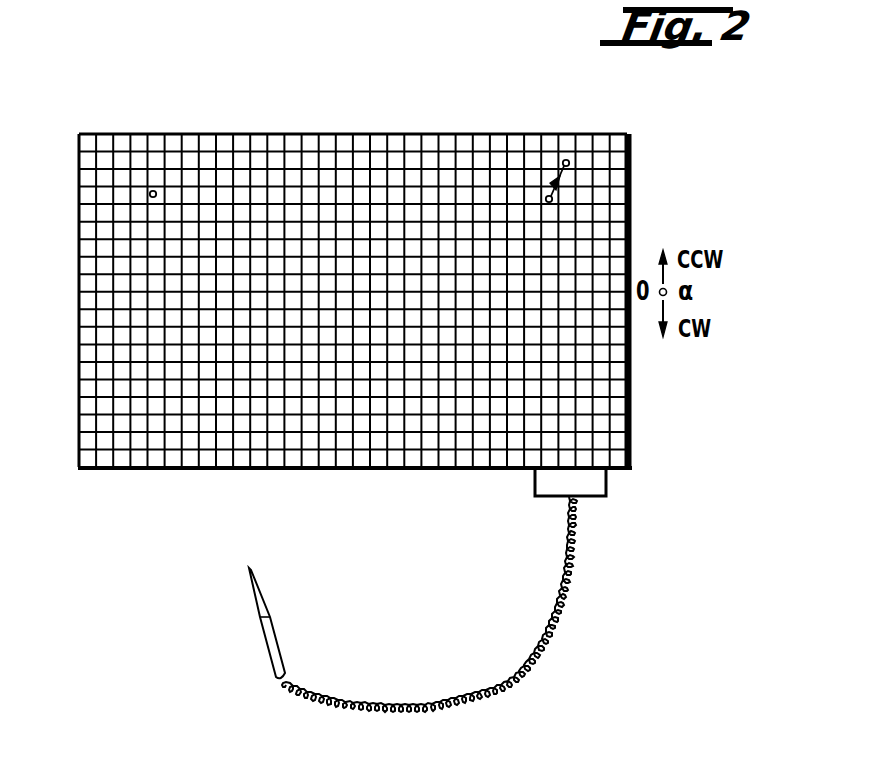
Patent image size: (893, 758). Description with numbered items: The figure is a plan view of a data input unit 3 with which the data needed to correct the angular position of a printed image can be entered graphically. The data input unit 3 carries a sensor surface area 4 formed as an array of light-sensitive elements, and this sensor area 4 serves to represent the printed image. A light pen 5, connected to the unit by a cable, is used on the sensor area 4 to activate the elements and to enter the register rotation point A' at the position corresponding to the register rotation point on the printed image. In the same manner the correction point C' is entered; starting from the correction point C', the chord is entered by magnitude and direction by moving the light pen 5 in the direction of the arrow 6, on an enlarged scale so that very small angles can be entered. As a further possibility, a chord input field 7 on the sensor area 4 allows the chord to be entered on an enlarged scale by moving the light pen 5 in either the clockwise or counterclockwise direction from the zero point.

The data input unit 3 is at (432, 124).
The sensor surface area 4 is at (513, 178).
The light pen 5 is at (275, 628).
The arrow 6 is at (563, 178).
The chord input field 7 is at (623, 197).
The register rotation point A' is at (163, 139).
The correction point C' is at (577, 122).